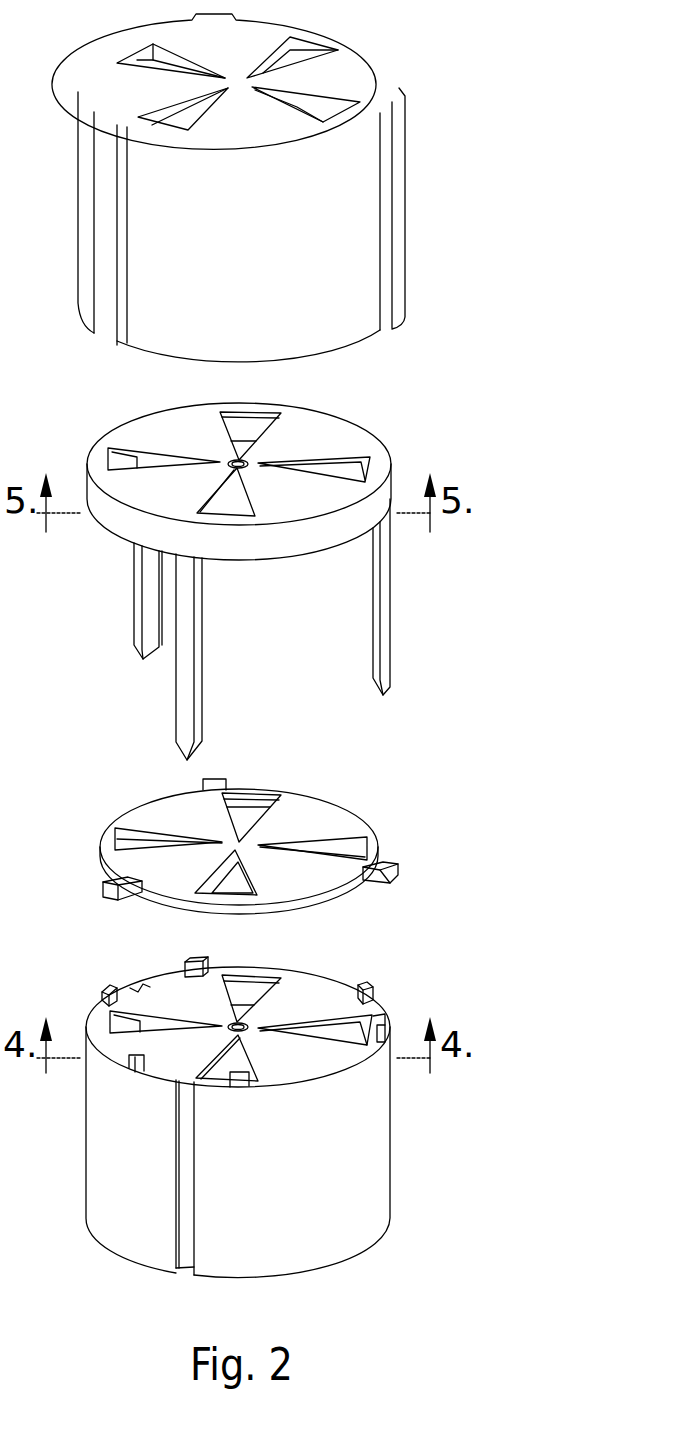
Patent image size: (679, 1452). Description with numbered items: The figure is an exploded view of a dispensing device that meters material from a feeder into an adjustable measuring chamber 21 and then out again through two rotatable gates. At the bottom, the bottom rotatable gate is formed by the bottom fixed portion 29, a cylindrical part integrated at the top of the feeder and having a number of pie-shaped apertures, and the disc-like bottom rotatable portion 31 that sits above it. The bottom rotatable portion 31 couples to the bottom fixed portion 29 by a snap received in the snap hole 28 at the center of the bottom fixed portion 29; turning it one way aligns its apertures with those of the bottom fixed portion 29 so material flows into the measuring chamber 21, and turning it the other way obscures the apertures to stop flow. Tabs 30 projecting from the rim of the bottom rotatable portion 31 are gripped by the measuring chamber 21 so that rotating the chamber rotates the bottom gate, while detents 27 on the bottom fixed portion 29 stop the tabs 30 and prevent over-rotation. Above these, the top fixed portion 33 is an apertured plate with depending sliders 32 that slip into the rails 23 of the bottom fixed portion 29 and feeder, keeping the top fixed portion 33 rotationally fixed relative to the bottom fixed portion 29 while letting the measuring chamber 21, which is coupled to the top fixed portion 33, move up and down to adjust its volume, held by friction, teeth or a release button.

The adjustable measuring chamber 21 is at (0, 643).
The rails 23 is at (185, 1228).
The detents 27 is at (240, 1084).
The snap hole 28 is at (232, 1020).
The bottom fixed portion 29 is at (308, 1060).
The tabs 30 is at (117, 902).
The bottom rotatable portion 31 is at (298, 820).
The sliders 32 is at (167, 702).
The top fixed portion 33 is at (318, 436).